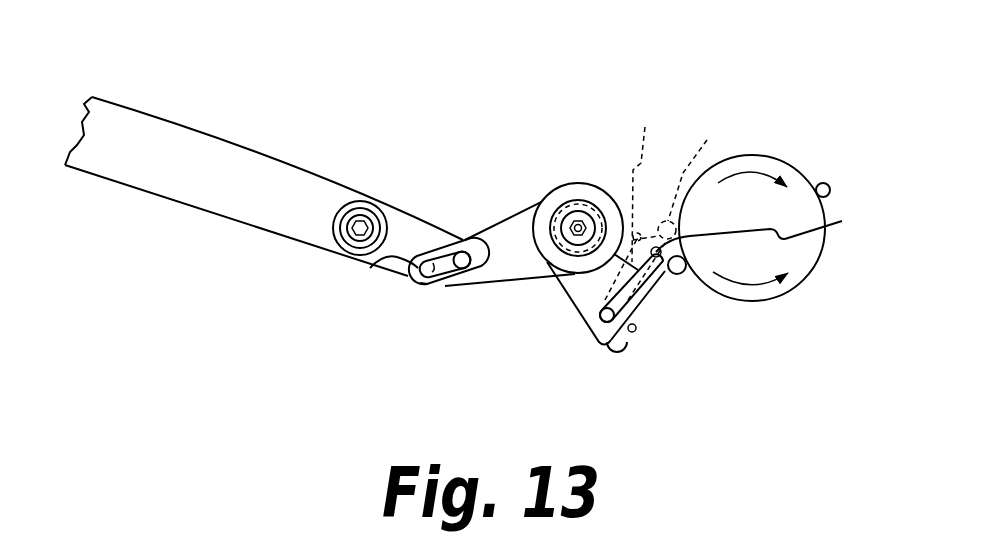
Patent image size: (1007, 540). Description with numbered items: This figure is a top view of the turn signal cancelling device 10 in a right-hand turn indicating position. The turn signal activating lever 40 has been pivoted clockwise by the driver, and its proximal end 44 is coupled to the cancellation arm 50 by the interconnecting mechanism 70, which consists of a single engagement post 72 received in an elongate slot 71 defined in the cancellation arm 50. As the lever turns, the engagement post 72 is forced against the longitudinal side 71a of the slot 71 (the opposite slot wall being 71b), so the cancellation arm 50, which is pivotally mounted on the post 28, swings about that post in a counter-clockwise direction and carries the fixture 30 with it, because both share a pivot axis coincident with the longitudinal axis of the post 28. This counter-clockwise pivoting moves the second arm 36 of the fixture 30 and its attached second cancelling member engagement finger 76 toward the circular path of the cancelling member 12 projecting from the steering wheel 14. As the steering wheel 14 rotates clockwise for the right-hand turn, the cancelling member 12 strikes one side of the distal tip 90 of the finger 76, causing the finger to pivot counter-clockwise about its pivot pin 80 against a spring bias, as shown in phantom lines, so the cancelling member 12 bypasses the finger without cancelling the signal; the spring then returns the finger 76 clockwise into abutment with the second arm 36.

The turn signal cancelling device 10 is at (662, 239).
The turn signal cancelling member 12 is at (728, 323).
The steering wheel 14 is at (772, 157).
The post 28 is at (578, 222).
The fixture 30 is at (555, 334).
The second arm 36 is at (585, 312).
The turn signal activating lever 40 is at (258, 218).
The proximal end 44 is at (252, 217).
The cancellation arm 50 is at (502, 230).
The interconnecting mechanism 70 is at (386, 204).
The elongate slot 71 is at (479, 242).
The longitudinal side 71a is at (420, 282).
The link upper portion 71b is at (377, 267).
The engagement post 72 is at (484, 246).
The second cancelling member engagement finger 76 is at (692, 340).
The pivot pin 80 is at (602, 327).
The tip 90 is at (767, 153).